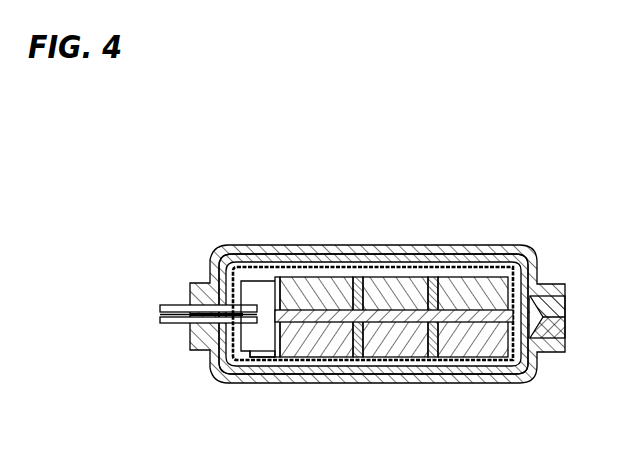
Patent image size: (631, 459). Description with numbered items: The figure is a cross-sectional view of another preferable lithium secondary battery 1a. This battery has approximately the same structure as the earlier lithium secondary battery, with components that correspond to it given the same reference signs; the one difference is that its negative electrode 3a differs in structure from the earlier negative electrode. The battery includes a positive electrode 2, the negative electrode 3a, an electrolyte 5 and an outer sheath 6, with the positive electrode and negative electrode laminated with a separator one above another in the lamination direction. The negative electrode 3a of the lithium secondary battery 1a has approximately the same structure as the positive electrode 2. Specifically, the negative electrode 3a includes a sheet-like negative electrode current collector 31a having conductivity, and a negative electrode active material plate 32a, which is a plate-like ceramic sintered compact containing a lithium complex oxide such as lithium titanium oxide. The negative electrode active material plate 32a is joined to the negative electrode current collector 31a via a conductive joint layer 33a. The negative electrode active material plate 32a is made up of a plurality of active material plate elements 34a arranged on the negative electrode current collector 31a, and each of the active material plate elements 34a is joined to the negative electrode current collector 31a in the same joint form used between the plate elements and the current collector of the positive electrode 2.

The lithium secondary battery 1a is at (133, 157).
The positive electrode 2 is at (398, 344).
The negative electrode 3a is at (219, 179).
The negative electrode current collector 31a is at (250, 247).
The negative electrode active material plate 32a is at (304, 194).
The conductive joint layer 33a is at (382, 273).
The active material plate elements 34a is at (317, 286).
The electrolyte 5 is at (262, 342).
The outer sheath 6 is at (516, 258).